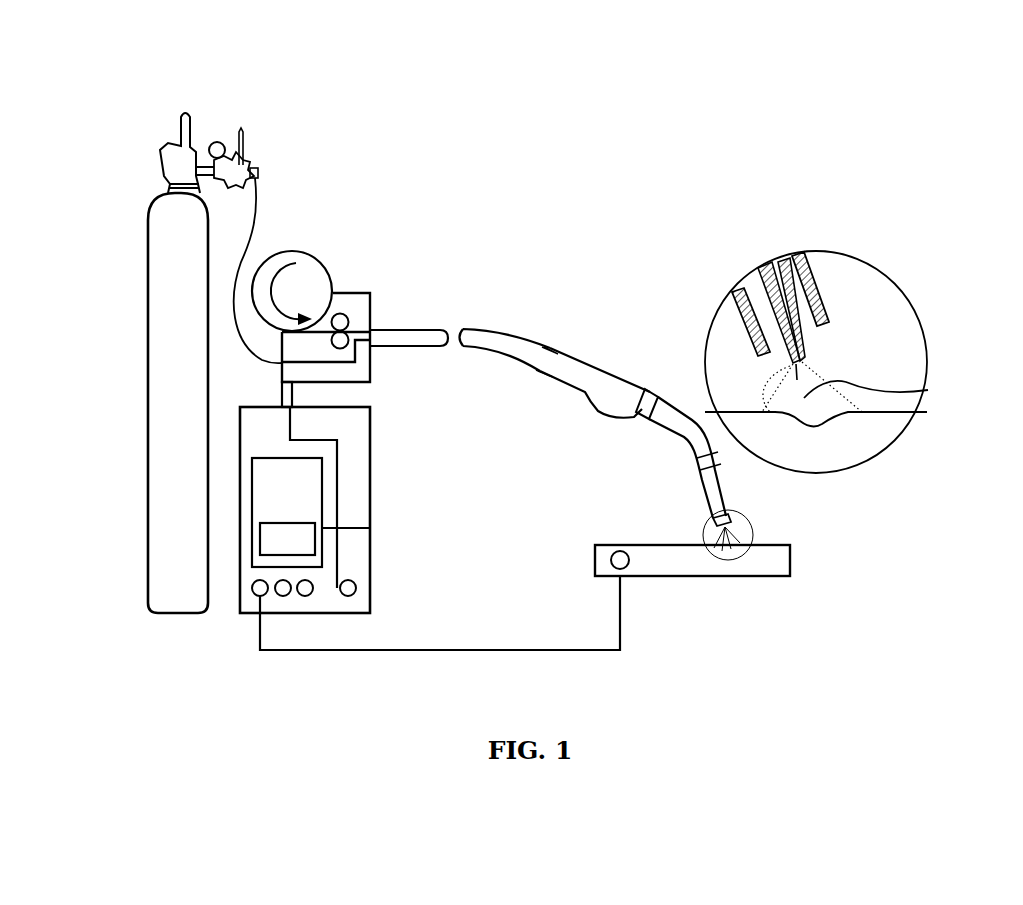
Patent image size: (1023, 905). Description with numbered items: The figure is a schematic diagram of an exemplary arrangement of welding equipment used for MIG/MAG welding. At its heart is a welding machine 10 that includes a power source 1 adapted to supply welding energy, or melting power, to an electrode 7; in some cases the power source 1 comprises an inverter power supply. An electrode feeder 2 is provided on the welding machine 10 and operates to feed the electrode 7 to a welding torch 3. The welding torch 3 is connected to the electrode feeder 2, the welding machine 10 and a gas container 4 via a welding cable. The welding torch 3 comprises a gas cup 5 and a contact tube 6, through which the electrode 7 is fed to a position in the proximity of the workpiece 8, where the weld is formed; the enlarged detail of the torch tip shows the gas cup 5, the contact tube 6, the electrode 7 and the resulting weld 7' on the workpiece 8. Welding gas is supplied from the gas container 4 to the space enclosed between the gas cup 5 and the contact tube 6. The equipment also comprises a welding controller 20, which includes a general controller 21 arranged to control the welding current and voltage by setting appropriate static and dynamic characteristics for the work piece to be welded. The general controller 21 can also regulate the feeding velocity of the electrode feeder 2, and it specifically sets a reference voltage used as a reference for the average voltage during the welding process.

The power source 1 is at (371, 430).
The electrode feeder 2 is at (351, 296).
The welding torch 3 is at (585, 372).
The gas container 4 is at (172, 256).
The gas cup 5 is at (719, 306).
The contact tube 6 is at (770, 257).
The electrode 7 is at (863, 316).
The weld bead 7' is at (891, 378).
The workpiece 8 is at (776, 555).
The welding machine 10 is at (557, 249).
The welding controller 20 is at (297, 543).
The general controller 21 is at (317, 485).